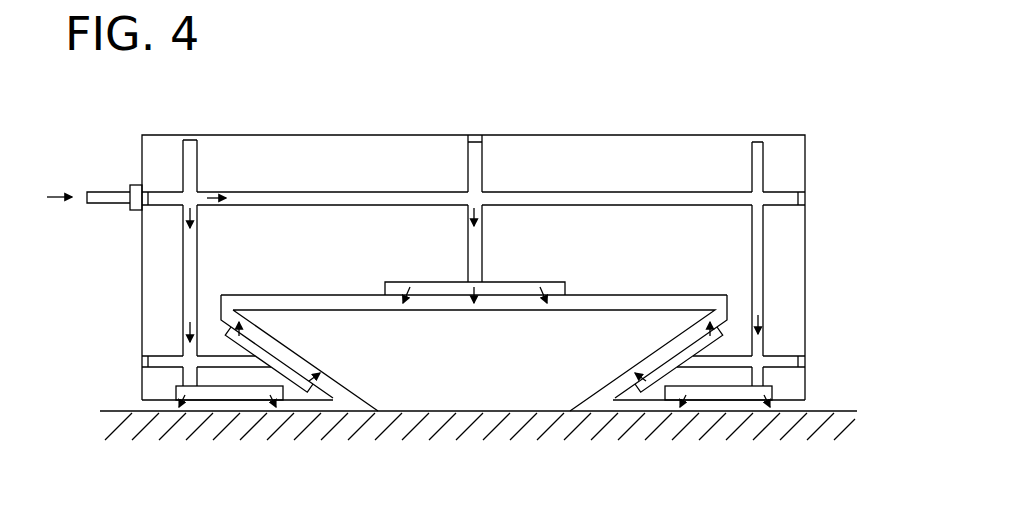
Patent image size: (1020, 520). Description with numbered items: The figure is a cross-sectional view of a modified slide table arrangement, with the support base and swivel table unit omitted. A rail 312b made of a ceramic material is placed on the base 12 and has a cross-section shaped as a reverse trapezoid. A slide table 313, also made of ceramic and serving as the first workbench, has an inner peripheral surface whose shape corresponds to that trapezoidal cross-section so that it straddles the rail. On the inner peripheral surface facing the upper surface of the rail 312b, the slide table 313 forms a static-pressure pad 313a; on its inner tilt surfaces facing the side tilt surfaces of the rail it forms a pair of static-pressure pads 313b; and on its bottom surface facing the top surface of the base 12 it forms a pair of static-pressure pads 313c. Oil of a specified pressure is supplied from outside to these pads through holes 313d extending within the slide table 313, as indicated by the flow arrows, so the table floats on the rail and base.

The base 12 is at (828, 410).
The rail 312b is at (448, 380).
The slide table 313 is at (805, 163).
The static-pressure pad 313a is at (507, 290).
The static-pressure pads 313b is at (290, 377).
The static-pressure pads 313c is at (215, 393).
The holes 313d is at (190, 290).